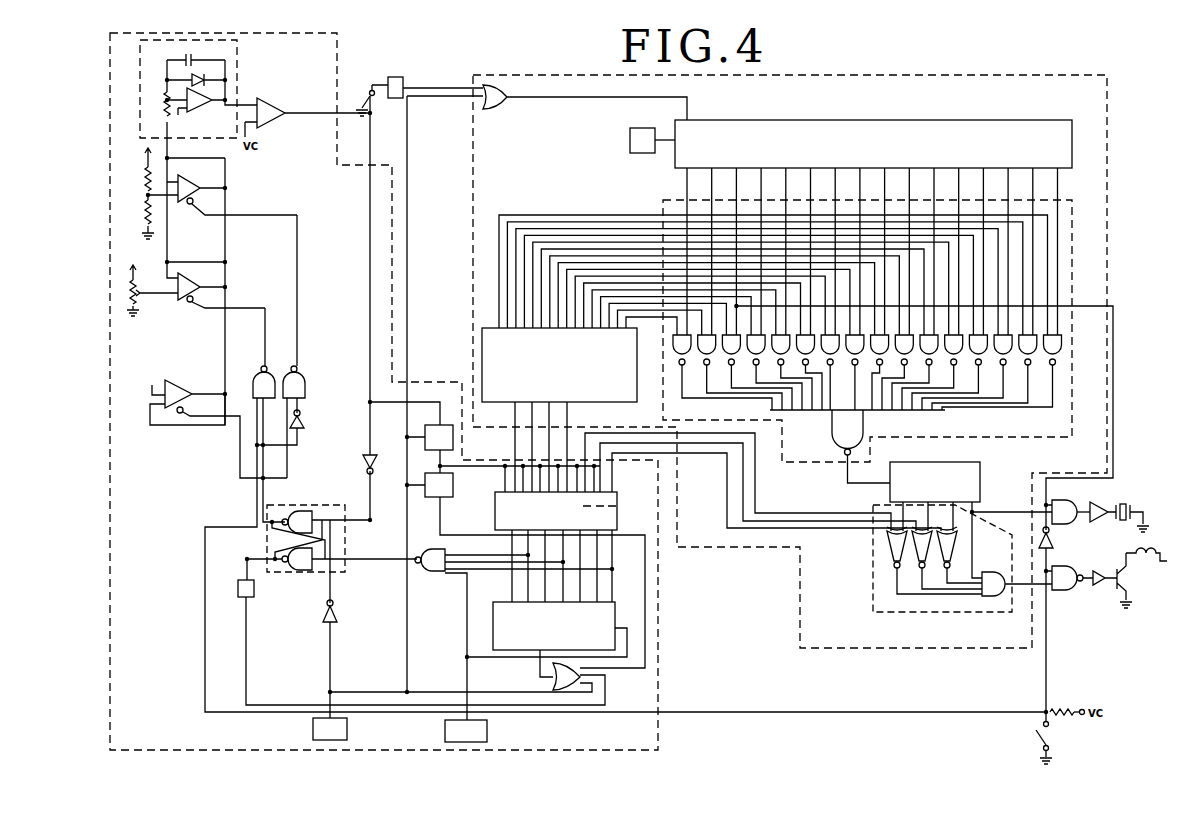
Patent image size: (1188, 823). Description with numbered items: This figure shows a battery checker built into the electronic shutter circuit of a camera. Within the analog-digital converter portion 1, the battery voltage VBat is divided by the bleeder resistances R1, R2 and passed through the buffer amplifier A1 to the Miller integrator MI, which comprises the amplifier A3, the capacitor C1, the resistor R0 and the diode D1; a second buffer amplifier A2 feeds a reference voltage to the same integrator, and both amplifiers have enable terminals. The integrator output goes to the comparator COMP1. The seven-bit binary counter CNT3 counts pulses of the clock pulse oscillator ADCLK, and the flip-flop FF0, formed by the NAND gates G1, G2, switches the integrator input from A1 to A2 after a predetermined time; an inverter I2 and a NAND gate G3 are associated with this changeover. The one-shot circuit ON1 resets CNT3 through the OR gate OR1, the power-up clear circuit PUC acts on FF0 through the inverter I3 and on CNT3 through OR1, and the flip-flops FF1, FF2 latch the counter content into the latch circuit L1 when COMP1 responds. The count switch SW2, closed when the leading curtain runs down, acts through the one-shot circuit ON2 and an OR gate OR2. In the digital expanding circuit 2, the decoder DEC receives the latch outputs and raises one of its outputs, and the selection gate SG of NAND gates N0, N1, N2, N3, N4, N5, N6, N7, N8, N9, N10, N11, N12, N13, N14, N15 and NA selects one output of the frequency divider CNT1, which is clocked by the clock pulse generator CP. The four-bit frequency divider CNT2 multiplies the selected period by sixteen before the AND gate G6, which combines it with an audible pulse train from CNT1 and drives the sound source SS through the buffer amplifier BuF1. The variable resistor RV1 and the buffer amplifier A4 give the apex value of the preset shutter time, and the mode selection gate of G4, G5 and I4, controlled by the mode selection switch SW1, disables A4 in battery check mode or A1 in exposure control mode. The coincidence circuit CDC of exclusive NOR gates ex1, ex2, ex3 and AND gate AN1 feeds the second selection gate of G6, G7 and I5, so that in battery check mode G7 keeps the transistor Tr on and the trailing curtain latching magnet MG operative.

The analog-digital converter circuit portion 1 is at (337, 47).
The digital expanding circuit 2 is at (943, 76).
The Miller integrator MI is at (237, 48).
The capacitor C1 is at (191, 54).
The diode D1 is at (199, 76).
The amplifier A3 is at (200, 112).
The resistor R0 is at (163, 112).
The comparator COMP1 is at (280, 91).
The count switch SW2 is at (370, 112).
The one-shot circuit ON2 is at (395, 77).
The OR gate OR2 is at (497, 106).
The clock pulse generator CP is at (652, 140).
The frequency divider CNT1 is at (873, 144).
The selection gate SG is at (1072, 250).
The decoder DEC is at (559, 365).
The NAND gate N0 is at (722, 372).
The NAND gate N1 is at (740, 372).
The NAND gate N2 is at (757, 372).
The NAND gate N3 is at (774, 372).
The NAND gate N4 is at (792, 372).
The NAND gate N5 is at (810, 372).
The NAND gate N6 is at (830, 372).
The NAND gate N7 is at (855, 372).
The NAND gate N8 is at (880, 372).
The NAND gate N9 is at (897, 372).
The NAND gate N10 is at (933, 352).
The NAND gate N11 is at (957, 352).
The NAND gate N12 is at (982, 352).
The NAND gate N13 is at (1007, 352).
The NAND gate N14 is at (1031, 352).
The NAND gate N15 is at (1058, 349).
The NAND gate NA is at (857, 446).
The 4-bit frequency divider CNT2 is at (935, 482).
The exclusive NOR gate ex1 is at (886, 540).
The exclusive NOR gate ex2 is at (921, 569).
The exclusive NOR gate ex3 is at (950, 569).
The coincidence circuit CDC is at (876, 578).
The AND gate AN1 is at (1017, 584).
The AND gate G6 is at (1071, 512).
The NAND gate G7 is at (1084, 578).
The inverter I5 is at (1050, 540).
The buffer amplifier BuF1 is at (1100, 520).
The sound source SS is at (1123, 503).
The transistor Tr is at (1128, 580).
The shutter trailing curtain latching magnet MG is at (1146, 548).
The mode selection switch SW1 is at (1048, 738).
The battery voltage VBat is at (134, 157).
The bleeder resistance R1 is at (141, 183).
The bleeder resistance R2 is at (141, 215).
The buffer amplifier A1 is at (237, 195).
The buffer amplifier A4 is at (195, 277).
The buffer amplifier A2 is at (211, 424).
The variable resistor RV1 is at (152, 282).
The NAND gate G4 is at (625, 510).
The NAND gate G5 is at (294, 346).
The inverter I4 is at (305, 422).
The inverter I2 is at (374, 466).
The inverter I3 is at (336, 614).
The flip-flop FF0 is at (318, 505).
The NAND gate G1 is at (322, 535).
The NAND gate G2 is at (332, 546).
The one-shot circuit ON1 is at (254, 590).
The power-up clear circuit PUC is at (330, 729).
The flip-flop FF1 is at (485, 437).
The flip-flop FF2 is at (526, 570).
The NAND gate G3 is at (513, 634).
The latch circuit L1 is at (556, 511).
The 7-bit binary counter CNT3 is at (547, 639).
The OR gate OR1 is at (554, 678).
The clock pulse oscillator ADCLK is at (466, 731).